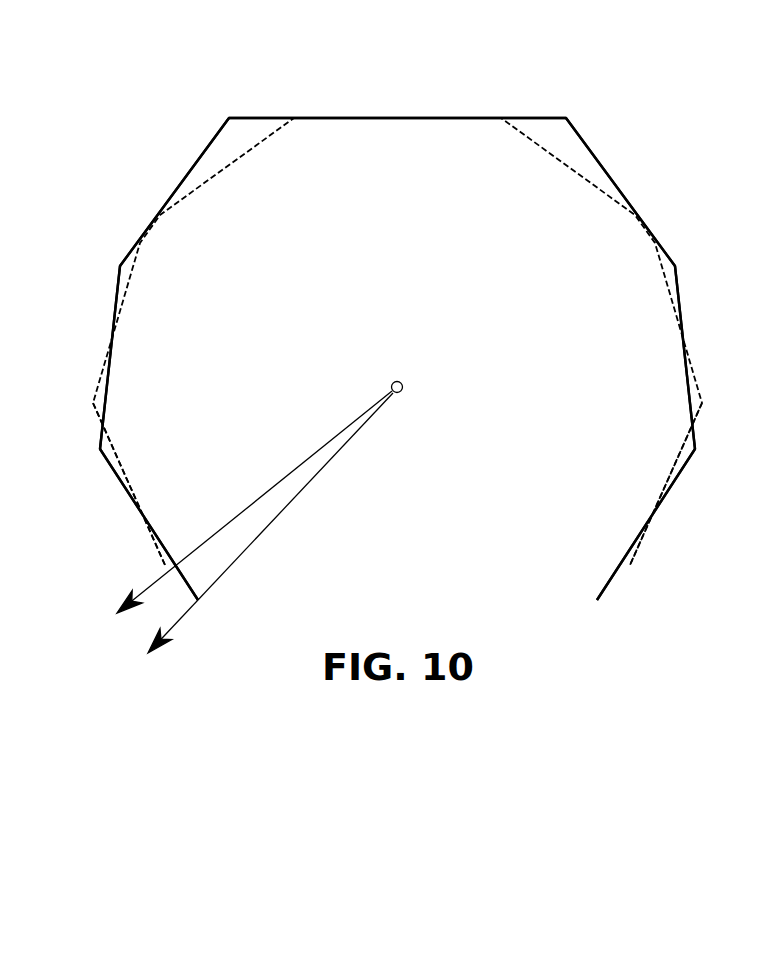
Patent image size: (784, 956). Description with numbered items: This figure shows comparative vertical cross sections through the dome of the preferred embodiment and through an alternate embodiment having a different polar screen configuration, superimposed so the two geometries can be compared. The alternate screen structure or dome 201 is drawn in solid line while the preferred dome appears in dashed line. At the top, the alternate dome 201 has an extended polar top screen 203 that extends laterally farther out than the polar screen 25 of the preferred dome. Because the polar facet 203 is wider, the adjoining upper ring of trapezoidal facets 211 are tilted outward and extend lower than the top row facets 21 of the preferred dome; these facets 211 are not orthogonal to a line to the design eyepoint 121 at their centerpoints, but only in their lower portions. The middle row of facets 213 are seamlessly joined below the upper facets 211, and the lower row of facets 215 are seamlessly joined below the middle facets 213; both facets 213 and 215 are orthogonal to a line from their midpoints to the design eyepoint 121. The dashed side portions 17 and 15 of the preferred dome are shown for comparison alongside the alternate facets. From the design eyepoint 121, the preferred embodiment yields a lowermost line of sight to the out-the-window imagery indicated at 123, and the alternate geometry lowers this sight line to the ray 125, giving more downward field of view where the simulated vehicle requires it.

The lower side wall portion (rotated position) 15 is at (114, 446).
The housing outline in rotated position 17 is at (128, 283).
The top row facets 21 is at (222, 172).
The polar screen 25 is at (411, 116).
The design eyepoint 121 is at (398, 380).
The lowermost line of sight 123 is at (243, 510).
The ray 125 is at (263, 532).
The dome 201 is at (255, 116).
The extended polar top screen 203 is at (538, 116).
The upper ring of trapezoidal facets 211 is at (179, 188).
The middle row of facets 213 is at (114, 308).
The lower row of facets 215 is at (142, 518).